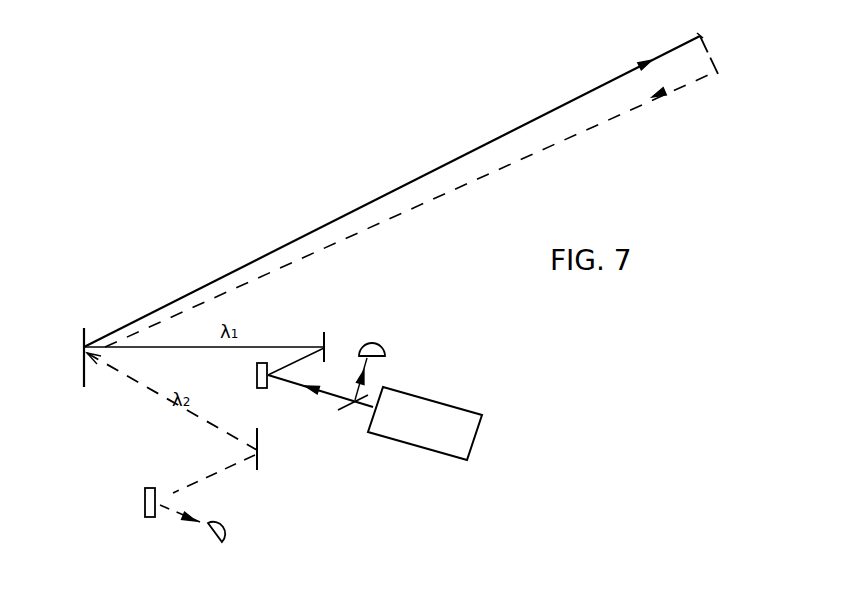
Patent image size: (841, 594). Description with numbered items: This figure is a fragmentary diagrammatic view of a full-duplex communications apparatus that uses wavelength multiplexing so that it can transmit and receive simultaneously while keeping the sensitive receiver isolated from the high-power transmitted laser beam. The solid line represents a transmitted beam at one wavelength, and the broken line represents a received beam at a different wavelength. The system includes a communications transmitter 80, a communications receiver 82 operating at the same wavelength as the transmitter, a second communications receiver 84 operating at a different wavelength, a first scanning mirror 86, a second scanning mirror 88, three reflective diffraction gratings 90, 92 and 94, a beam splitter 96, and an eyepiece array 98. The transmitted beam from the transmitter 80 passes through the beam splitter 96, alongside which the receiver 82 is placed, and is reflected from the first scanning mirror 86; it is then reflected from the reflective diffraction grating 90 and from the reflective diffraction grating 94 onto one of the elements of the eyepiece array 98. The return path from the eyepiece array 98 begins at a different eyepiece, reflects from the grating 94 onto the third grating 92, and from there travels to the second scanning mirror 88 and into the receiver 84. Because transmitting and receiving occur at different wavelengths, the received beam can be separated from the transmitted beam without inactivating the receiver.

The communications transmitter 80 is at (440, 399).
The communications receiver 82 is at (383, 342).
The communications receiver 84 is at (226, 526).
The first scanning mirror 86 is at (262, 388).
The second scanning mirror 88 is at (145, 494).
The reflective diffraction grating 90 is at (325, 332).
The reflective diffraction grating 92 is at (258, 460).
The reflective diffraction grating 94 is at (84, 328).
The beam splitter 96 is at (350, 412).
The eyepiece array 98 is at (717, 68).